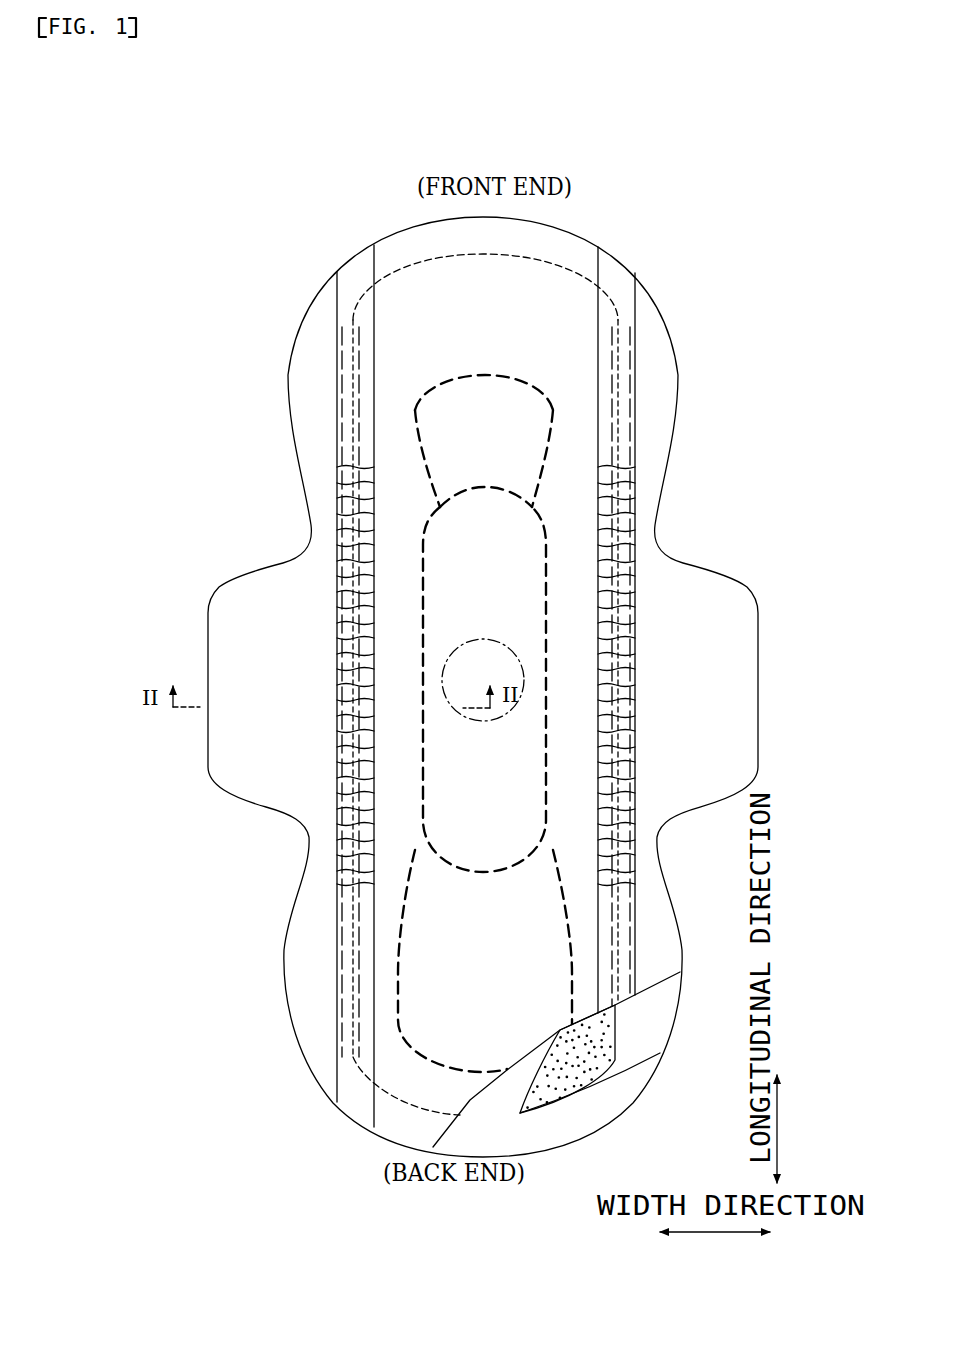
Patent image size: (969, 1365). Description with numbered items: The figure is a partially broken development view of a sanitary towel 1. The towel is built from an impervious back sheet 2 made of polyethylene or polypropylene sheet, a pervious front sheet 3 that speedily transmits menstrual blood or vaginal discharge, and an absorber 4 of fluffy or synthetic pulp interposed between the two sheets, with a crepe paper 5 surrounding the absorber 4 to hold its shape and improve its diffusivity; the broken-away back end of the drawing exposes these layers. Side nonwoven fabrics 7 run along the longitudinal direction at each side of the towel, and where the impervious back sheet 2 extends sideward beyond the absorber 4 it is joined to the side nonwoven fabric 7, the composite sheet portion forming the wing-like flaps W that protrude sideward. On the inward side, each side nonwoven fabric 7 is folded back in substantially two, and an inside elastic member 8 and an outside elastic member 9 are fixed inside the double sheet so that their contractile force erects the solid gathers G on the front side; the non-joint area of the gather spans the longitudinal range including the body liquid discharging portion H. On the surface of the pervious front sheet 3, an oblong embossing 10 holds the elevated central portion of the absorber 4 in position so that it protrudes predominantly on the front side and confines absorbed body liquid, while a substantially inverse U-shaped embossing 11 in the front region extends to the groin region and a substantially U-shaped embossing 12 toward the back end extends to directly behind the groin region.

The sanitary towel 1 is at (669, 319).
The impervious back sheet 2 is at (647, 1063).
The pervious front sheet 3 is at (528, 965).
The absorber 4 is at (567, 1073).
The crepe paper 5 is at (500, 1103).
The side nonwoven fabric 7 is at (310, 925).
The inside elastic member 8 is at (359, 380).
The outside elastic member 9 is at (336, 380).
The oblong embossing 10 is at (424, 537).
The substantially inverse U-shaped embossing 11 is at (553, 420).
The substantially U-shaped embossing 12 is at (400, 972).
The solid gather G is at (331, 678).
The body liquid discharging portion H is at (464, 718).
The wing-like flap W is at (221, 582).